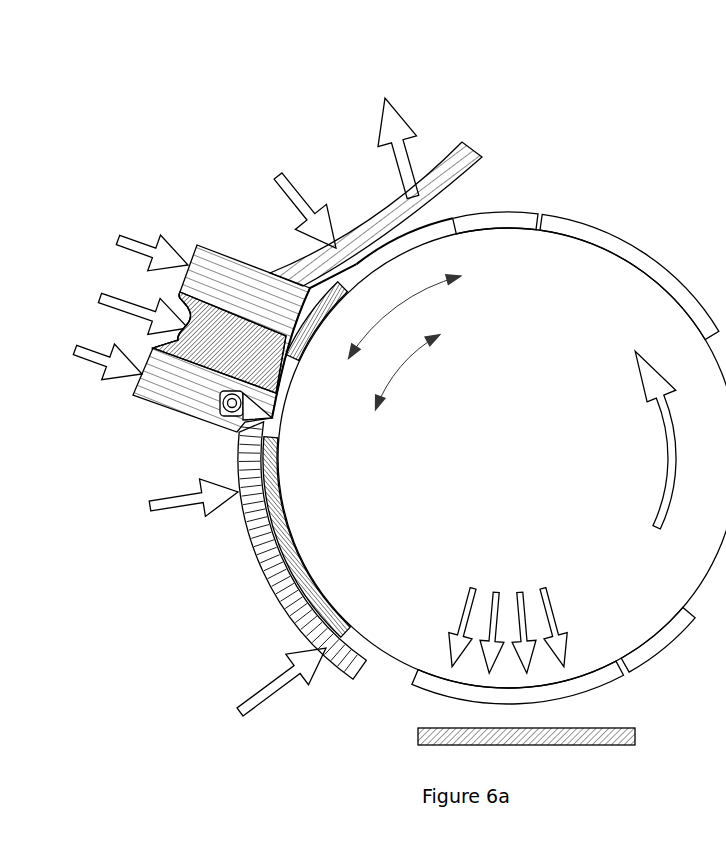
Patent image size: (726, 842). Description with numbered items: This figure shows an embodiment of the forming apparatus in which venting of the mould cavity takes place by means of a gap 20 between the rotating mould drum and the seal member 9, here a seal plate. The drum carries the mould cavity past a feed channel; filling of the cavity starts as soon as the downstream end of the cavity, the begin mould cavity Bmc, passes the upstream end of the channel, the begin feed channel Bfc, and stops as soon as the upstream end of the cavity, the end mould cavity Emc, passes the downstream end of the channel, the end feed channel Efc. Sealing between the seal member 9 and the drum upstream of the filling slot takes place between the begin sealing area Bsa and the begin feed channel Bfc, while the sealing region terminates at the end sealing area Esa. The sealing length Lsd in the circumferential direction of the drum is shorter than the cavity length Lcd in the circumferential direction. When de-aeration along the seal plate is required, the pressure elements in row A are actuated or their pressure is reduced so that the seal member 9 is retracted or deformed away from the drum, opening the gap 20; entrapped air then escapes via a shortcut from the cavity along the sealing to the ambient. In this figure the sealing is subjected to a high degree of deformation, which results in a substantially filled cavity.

The gap 20 is at (493, 193).
The end mould cavity Emc is at (457, 218).
The begin sealing area Bsa is at (355, 265).
The row of pressure elements A is at (395, 100).
The begin feed channel Bfc is at (290, 320).
The begin mould cavity Bmc is at (283, 337).
The end feed channel Efc is at (266, 392).
The seal member 9 is at (268, 547).
The end sealing area Esa is at (368, 660).
The cavity length Lcd is at (405, 314).
The sealing length Lsd is at (401, 372).